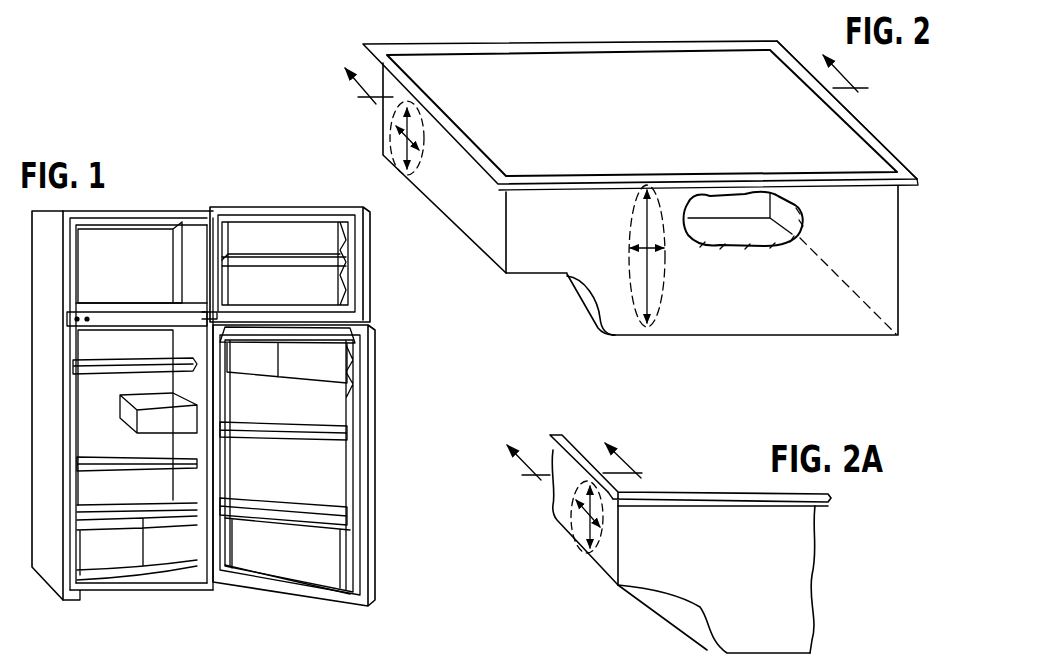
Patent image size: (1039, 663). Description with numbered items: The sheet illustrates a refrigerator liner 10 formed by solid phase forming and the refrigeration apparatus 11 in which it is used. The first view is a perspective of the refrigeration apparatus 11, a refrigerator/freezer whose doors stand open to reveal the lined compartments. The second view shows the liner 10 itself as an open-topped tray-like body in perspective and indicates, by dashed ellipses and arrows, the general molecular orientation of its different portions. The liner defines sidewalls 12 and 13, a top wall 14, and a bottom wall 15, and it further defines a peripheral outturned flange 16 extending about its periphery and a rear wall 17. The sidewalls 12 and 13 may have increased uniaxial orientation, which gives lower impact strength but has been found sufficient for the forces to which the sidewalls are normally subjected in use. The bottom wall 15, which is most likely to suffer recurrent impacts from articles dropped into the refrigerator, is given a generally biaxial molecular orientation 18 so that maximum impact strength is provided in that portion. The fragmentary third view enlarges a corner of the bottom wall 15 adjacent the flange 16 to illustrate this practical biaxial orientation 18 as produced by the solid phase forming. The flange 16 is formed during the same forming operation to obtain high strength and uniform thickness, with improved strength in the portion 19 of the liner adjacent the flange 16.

In FIG. 2, the refrigerator liner 10 is at (613, 41).
In FIG. 1, the refrigeration apparatus 11 is at (53, 418).
In FIG. 2, the sidewall 12 is at (750, 303).
In FIG. 2, the sidewall 13 is at (508, 80).
In FIG. 2, the top wall 14 is at (858, 152).
In FIG. 2, the bottom wall 15 is at (467, 207).
In FIG. 2, the peripheral outturned flange 16 is at (542, 183).
In FIG. 2, the rear wall 17 is at (702, 226).
In FIG. 2A, the biaxial molecular orientation 18 is at (590, 552).
In FIG. 2, the portion of the liner adjacent the flange 19 is at (427, 63).